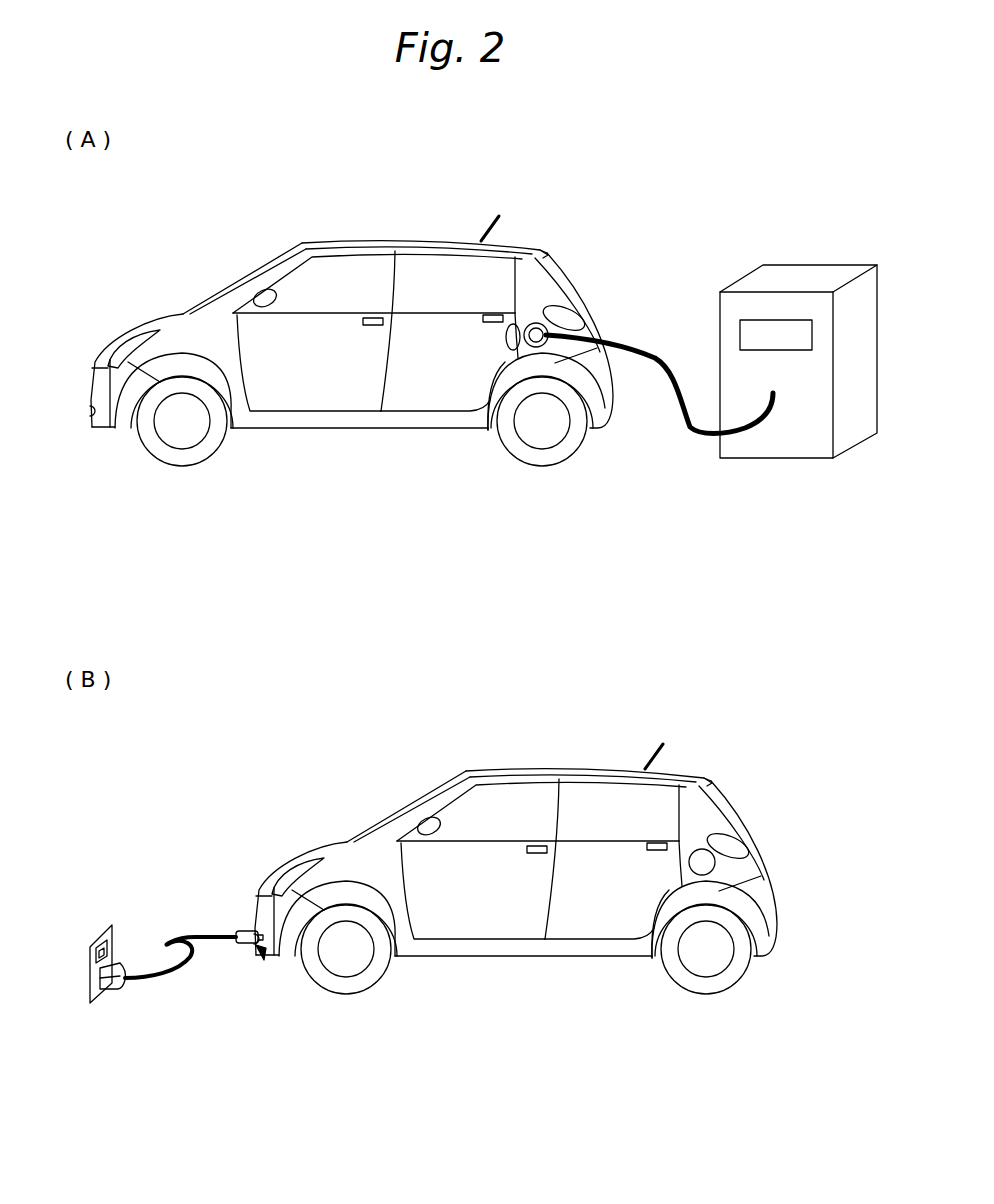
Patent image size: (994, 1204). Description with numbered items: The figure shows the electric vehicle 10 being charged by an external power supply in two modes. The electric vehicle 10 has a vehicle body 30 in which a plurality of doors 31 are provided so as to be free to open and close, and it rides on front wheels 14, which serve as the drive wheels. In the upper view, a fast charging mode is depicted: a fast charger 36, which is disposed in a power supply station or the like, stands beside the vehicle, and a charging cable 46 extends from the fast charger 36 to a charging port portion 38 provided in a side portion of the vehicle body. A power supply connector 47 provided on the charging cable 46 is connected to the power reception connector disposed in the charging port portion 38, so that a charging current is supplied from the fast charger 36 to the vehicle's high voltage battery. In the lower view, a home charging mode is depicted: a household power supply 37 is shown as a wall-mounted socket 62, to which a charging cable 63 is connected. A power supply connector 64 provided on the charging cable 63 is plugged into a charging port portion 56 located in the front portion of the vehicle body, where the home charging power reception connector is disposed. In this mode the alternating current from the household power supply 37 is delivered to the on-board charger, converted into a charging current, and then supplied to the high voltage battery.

In FIG. 2A, the electric vehicle 10 is at (315, 336).
In FIG. 2B, the electric vehicle 10 is at (515, 863).
In FIG. 2A, the front wheels 14 is at (185, 464).
In FIG. 2B, the front wheels 14 is at (526, 968).
In FIG. 2A, the vehicle body 30 is at (343, 238).
In FIG. 2B, the vehicle body 30 is at (588, 738).
In FIG. 2A, the doors 31 is at (313, 388).
In FIG. 2B, the doors 31 is at (541, 888).
In FIG. 2A, the fast charger 36 is at (794, 278).
In FIG. 2A, the charging port portion 38 is at (538, 320).
In FIG. 2B, the charging port portion 38 is at (716, 806).
In FIG. 2A, the charging cable 46 is at (660, 352).
In FIG. 2A, the power supply connector 47 is at (490, 408).
In FIG. 2A, the charging port portion 56 is at (88, 411).
In FIG. 2B, the charging port portion 56 is at (267, 978).
In FIG. 2B, the household power supply 37 is at (96, 933).
In FIG. 2B, the socket 62 is at (116, 936).
In FIG. 2B, the charging cable 63 is at (168, 980).
In FIG. 2B, the power supply connector 64 is at (243, 929).